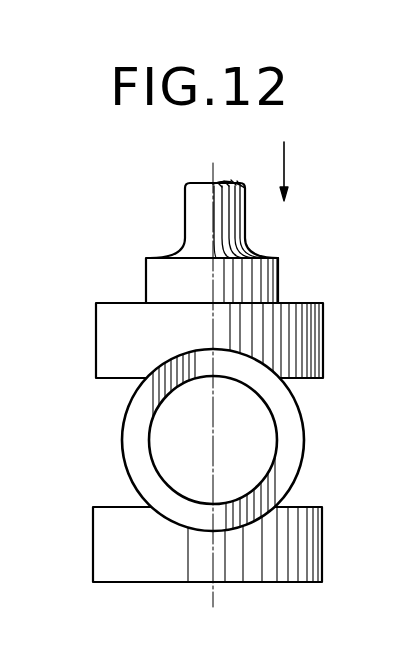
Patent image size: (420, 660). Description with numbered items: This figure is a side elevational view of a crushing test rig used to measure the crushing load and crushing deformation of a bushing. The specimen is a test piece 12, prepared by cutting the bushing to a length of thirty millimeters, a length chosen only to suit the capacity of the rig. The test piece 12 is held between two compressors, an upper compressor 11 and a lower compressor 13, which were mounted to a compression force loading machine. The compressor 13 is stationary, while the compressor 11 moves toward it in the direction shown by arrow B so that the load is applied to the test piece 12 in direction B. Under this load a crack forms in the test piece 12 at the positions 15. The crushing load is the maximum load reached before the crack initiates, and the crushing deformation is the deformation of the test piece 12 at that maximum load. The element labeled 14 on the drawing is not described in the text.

The compressor 11 is at (104, 322).
The test piece 12 is at (122, 430).
The compressor 13 is at (322, 527).
The stem 14 is at (188, 212).
The crack positions 15 is at (214, 382).
The direction of compression B is at (287, 190).